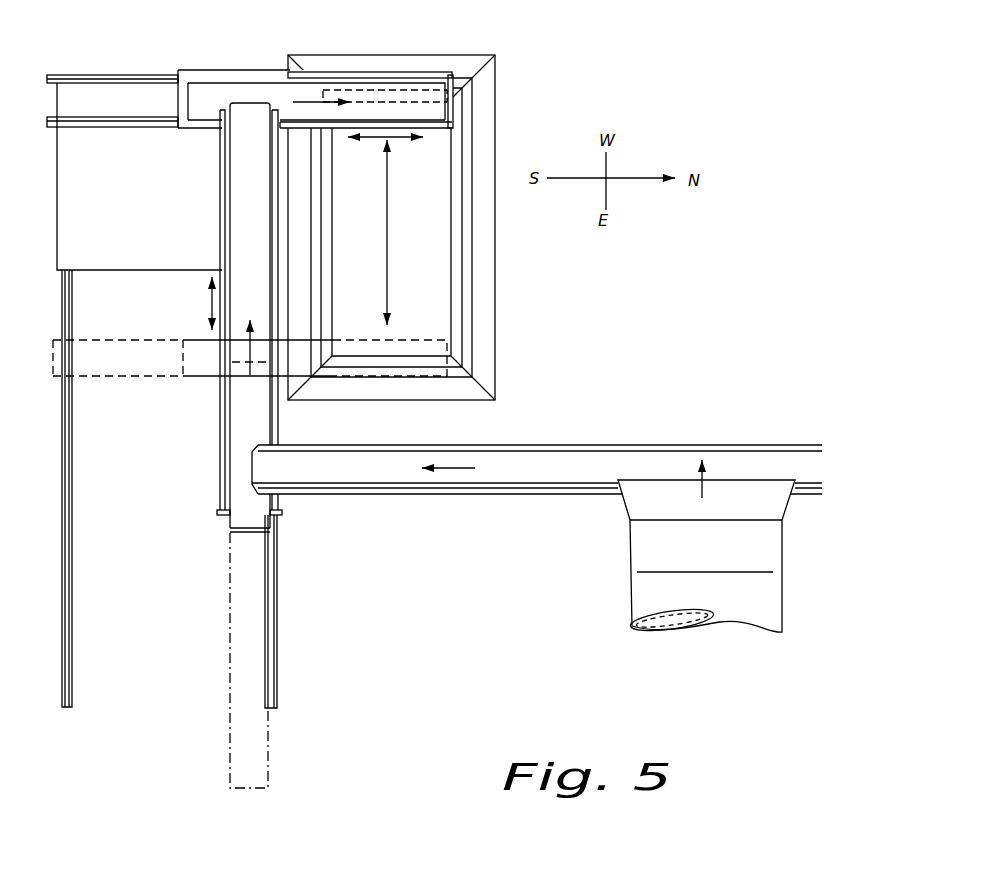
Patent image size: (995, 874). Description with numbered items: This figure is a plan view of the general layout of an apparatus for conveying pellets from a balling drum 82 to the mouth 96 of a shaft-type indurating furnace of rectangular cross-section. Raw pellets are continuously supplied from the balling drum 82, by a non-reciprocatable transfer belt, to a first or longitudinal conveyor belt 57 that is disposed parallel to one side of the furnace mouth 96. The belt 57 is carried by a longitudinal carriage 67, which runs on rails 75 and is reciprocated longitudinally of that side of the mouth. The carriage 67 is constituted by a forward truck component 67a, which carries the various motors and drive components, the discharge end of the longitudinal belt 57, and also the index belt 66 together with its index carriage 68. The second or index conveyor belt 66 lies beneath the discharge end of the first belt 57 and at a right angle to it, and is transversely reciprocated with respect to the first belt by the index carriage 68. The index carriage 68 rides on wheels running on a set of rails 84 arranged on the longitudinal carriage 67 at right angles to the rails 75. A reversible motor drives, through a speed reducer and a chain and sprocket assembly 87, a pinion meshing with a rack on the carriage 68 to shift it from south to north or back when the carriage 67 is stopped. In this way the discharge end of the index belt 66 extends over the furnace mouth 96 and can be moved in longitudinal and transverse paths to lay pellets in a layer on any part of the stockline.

The rails 84 is at (135, 58).
The index conveyor belt 66 is at (203, 87).
The index carriage 68 is at (262, 72).
The forward truck component 67a is at (139, 176).
The furnace mouth 96 is at (497, 357).
The longitudinal carriage 67 is at (220, 415).
The longitudinal conveyor belt 57 is at (253, 422).
The chain and sprocket assembly 87 is at (513, 473).
The balling drum 82 is at (643, 546).
The rails 75 is at (73, 626).